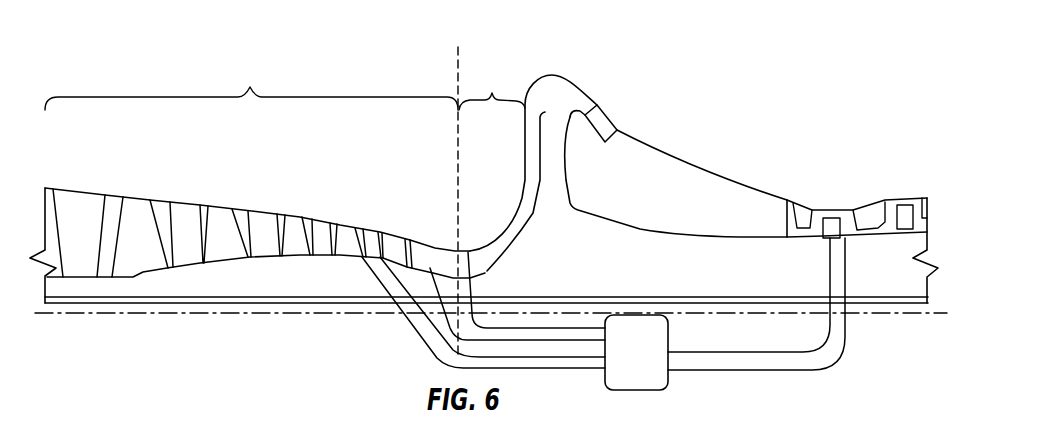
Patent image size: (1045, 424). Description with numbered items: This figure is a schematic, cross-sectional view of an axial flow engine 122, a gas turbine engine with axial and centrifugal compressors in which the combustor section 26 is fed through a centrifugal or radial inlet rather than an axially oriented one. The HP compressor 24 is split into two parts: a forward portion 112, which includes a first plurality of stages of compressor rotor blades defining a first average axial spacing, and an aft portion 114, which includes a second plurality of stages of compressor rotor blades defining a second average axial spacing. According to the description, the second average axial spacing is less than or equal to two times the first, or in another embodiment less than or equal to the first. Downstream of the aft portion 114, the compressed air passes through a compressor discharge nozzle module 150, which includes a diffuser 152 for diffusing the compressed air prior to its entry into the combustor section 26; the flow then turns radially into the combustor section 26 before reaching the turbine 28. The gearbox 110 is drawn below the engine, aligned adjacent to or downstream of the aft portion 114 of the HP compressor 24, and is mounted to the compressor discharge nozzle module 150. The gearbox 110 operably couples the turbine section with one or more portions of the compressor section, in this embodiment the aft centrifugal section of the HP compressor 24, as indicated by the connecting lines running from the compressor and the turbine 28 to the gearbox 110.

The axial flow engine 122 is at (127, 51).
The forward portion 112 is at (251, 78).
The aft portion 114 is at (492, 85).
The HP compressor 24 is at (262, 211).
The combustor section 26 is at (708, 217).
The turbine 28 is at (903, 217).
The diffuser 152 is at (497, 255).
The compressor discharge nozzle module 150 is at (480, 253).
The gearbox 110 is at (652, 362).